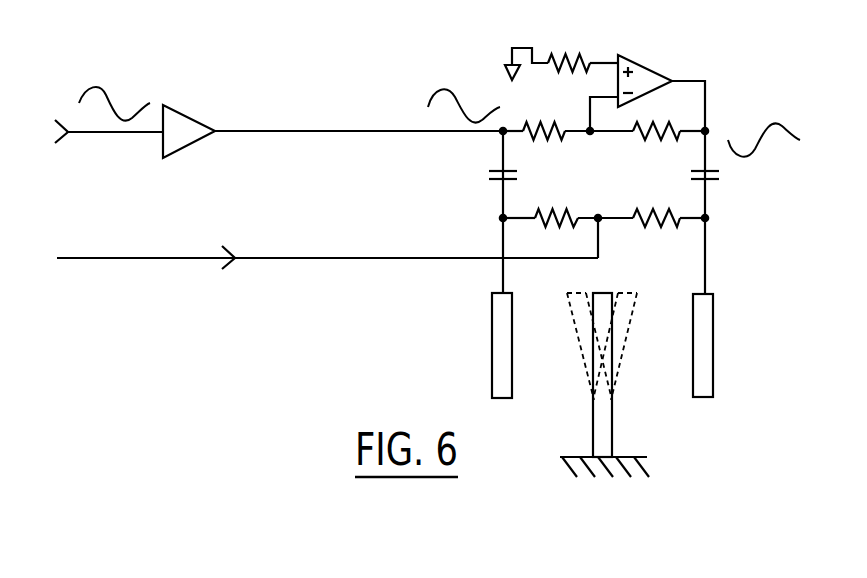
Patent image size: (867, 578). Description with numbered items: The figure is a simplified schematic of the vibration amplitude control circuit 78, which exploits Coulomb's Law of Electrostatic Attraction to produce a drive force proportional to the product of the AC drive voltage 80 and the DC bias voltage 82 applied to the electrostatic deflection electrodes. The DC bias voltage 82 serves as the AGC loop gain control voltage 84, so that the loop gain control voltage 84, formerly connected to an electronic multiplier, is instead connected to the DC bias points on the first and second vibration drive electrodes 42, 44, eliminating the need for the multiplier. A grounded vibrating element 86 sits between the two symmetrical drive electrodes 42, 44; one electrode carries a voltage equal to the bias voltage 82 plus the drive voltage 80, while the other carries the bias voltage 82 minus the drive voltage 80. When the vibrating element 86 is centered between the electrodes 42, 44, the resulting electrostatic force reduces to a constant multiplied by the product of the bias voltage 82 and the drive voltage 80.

The control circuit 78 is at (284, 62).
The AC drive voltage 80 is at (253, 130).
The DC bias voltage 82 is at (298, 257).
The loop gain control voltage 84 is at (143, 257).
The first vibration drive electrode 42 is at (492, 352).
The second vibration drive electrode 44 is at (715, 348).
The vibrating element 86 is at (612, 432).